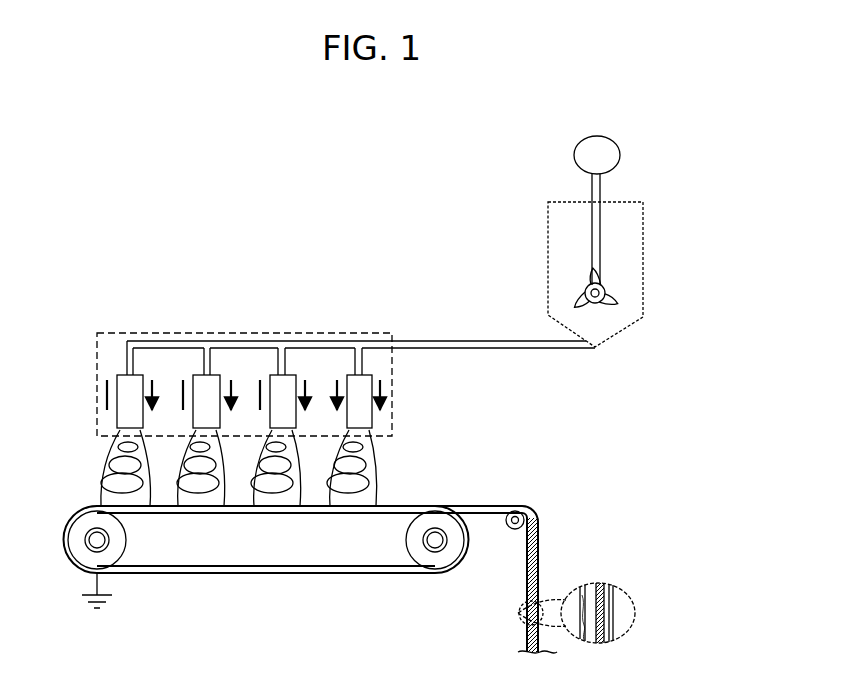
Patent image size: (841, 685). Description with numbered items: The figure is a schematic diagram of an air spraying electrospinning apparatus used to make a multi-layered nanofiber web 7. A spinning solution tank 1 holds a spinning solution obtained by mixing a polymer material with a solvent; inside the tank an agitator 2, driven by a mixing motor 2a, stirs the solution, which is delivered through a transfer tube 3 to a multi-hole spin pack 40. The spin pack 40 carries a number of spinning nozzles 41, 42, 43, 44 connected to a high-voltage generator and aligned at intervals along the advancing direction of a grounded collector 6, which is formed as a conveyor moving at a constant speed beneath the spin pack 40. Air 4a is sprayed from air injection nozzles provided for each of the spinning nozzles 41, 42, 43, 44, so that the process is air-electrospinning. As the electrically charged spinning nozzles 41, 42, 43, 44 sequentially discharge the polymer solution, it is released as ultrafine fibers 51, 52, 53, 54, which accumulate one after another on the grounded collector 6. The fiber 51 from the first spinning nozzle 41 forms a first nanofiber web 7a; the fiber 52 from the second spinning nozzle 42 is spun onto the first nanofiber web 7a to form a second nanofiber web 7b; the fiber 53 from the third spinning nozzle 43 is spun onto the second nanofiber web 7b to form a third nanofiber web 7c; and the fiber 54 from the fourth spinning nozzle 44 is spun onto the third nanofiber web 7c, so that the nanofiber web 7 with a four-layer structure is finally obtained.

The spinning solution tank 1 is at (645, 248).
The agitator 2 is at (636, 283).
The mixing motor 2a is at (621, 155).
The transfer tube 3 is at (416, 341).
The multi-hole spin pack 40 is at (96, 380).
The first spinning nozzle 41 is at (121, 375).
The second spinning nozzle 42 is at (196, 375).
The third spinning nozzle 43 is at (273, 375).
The fourth spinning nozzle 44 is at (350, 375).
The air 4a is at (385, 387).
The ultrafine fiber 51 is at (104, 468).
The ultrafine fiber 52 is at (177, 469).
The ultrafine fiber 53 is at (345, 483).
The ultrafine fiber 54 is at (368, 462).
The grounded collector 6 is at (341, 509).
The multi-layered nanofiber web 7 is at (546, 566).
The first nanofiber web 7a is at (158, 520).
The second nanofiber web 7b is at (222, 520).
The third nanofiber web 7c is at (297, 520).